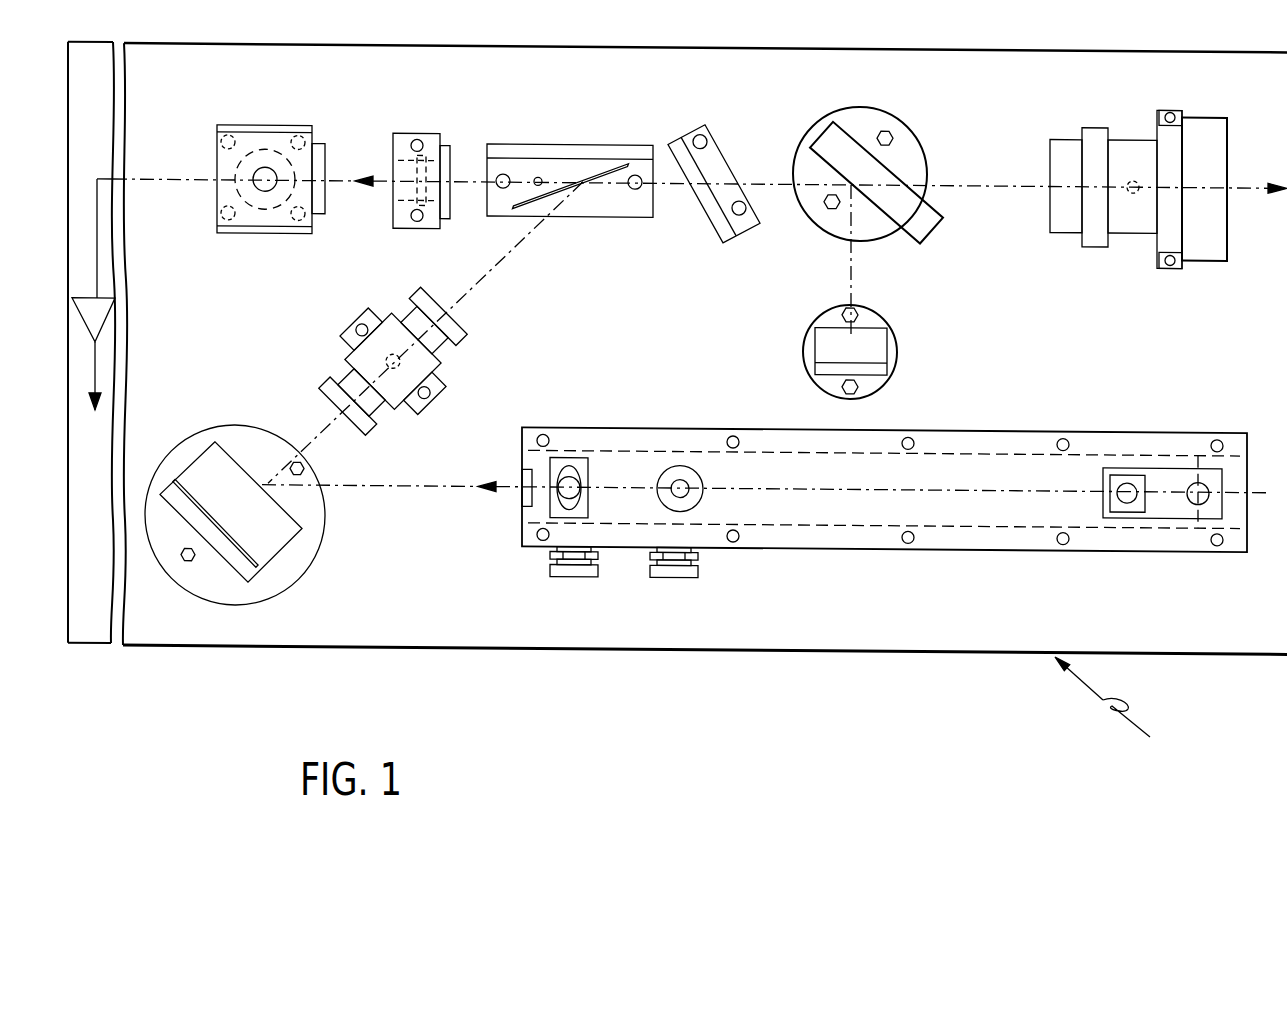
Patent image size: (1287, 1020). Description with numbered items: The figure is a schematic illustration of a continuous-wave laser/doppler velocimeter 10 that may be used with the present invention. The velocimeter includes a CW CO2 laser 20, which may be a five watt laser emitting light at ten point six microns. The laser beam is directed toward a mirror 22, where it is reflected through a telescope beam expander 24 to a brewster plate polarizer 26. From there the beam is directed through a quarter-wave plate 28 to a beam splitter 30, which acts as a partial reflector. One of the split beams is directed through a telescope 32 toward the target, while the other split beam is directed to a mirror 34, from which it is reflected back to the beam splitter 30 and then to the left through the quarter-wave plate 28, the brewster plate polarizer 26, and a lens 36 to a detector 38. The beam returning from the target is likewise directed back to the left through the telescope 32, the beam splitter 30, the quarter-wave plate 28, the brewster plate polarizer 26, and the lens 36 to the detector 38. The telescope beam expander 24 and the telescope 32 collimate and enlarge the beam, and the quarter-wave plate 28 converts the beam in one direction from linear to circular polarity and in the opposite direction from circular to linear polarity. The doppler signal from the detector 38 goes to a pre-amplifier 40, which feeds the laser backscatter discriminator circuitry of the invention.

The CW laser/doppler velocimeter 10 is at (1118, 707).
The CW CO2 laser 20 is at (1137, 425).
The mirror 22 is at (277, 574).
The telescope beam expander 24 is at (437, 366).
The brewster plate polarizer 26 is at (582, 148).
The quarter-wave plate 28 is at (712, 133).
The beam splitter 30 is at (872, 109).
The telescope 32 is at (1205, 112).
The mirror 34 is at (890, 341).
The lens 36 is at (423, 131).
The detector 38 is at (268, 126).
The pre-amplifier 40 is at (108, 308).